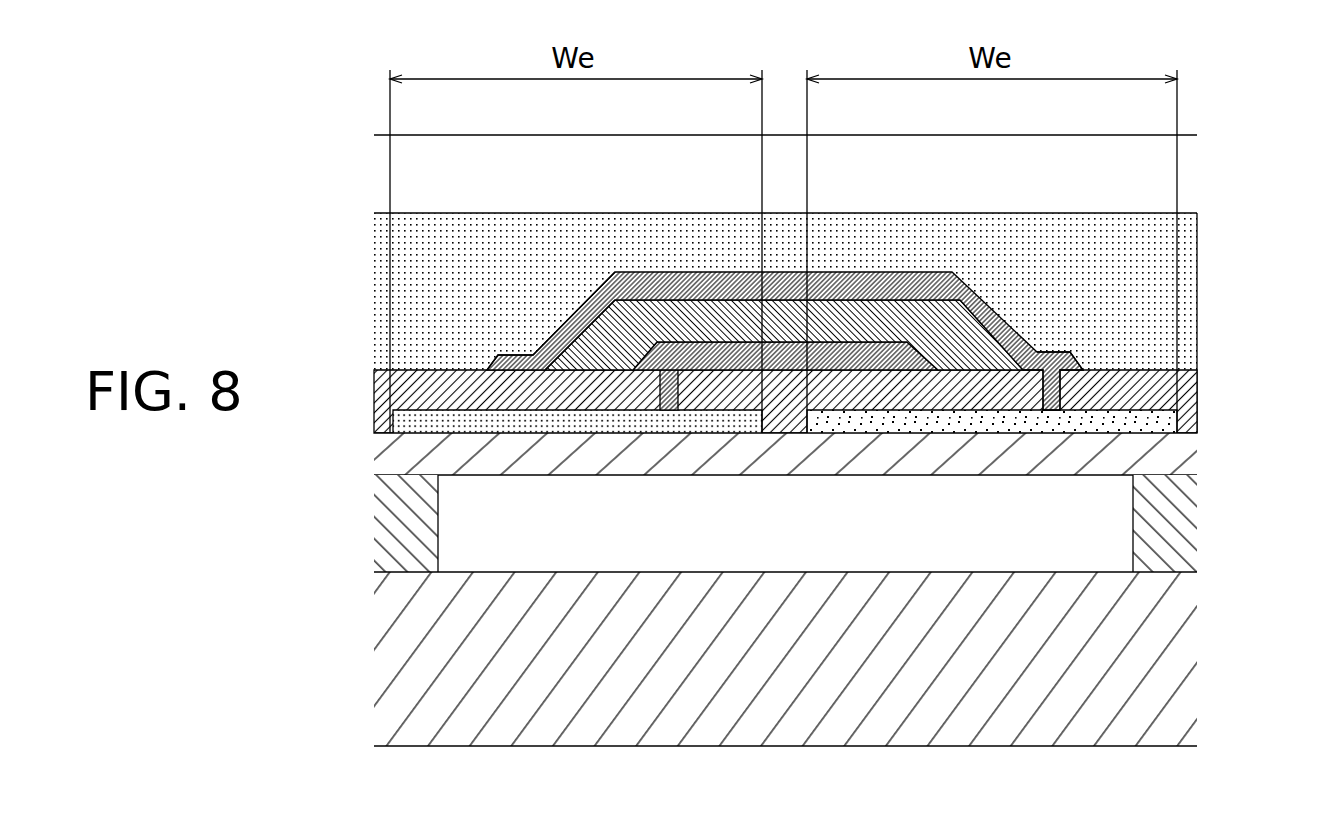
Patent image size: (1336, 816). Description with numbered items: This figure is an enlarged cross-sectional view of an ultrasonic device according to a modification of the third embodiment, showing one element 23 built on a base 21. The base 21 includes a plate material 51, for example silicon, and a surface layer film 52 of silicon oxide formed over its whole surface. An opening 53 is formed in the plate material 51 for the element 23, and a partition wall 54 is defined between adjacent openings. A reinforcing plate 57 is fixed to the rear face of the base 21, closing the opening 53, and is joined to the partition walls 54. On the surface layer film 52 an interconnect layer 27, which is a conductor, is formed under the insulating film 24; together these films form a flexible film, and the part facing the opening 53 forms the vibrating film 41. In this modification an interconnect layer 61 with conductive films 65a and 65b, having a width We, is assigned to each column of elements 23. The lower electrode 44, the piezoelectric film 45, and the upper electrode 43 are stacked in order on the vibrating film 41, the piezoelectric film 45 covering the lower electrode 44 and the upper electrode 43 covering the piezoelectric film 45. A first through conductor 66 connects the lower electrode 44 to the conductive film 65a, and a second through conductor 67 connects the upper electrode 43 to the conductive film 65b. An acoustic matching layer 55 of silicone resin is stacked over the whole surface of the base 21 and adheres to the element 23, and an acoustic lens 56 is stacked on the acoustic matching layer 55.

The base 21 is at (851, 484).
The element 23 is at (808, 344).
The insulating film 24 is at (1183, 386).
The interconnect layer 27 is at (778, 465).
The vibrating film 41 is at (785, 438).
The upper electrode 43 is at (808, 315).
The lower electrode 44 is at (925, 352).
The piezoelectric film 45 is at (603, 318).
The plate material 51 is at (820, 507).
The surface layer film 52 is at (1185, 453).
The opening 53 is at (1132, 552).
The partition wall 54 is at (440, 527).
The acoustic matching layer 55 is at (1183, 263).
The acoustic lens 56 is at (1180, 175).
The reinforcing plate 57 is at (1183, 672).
The interconnect layer 61 is at (367, 436).
The conductive film 65a is at (376, 422).
The conductive film 65b is at (944, 427).
The first through conductor 66 is at (669, 410).
The second through conductor 67 is at (1073, 388).